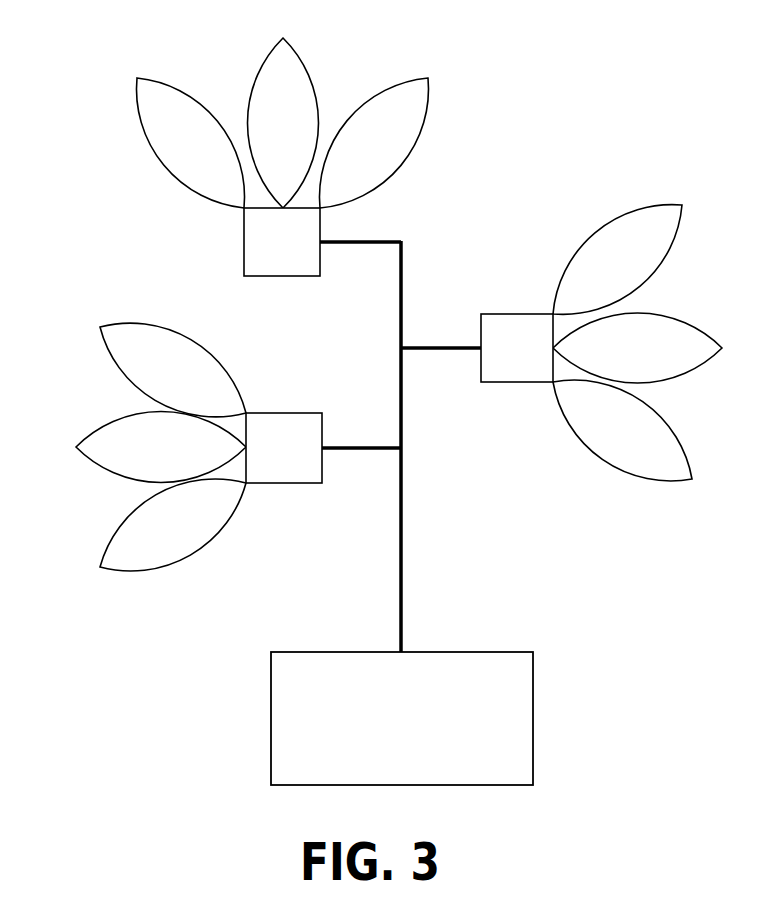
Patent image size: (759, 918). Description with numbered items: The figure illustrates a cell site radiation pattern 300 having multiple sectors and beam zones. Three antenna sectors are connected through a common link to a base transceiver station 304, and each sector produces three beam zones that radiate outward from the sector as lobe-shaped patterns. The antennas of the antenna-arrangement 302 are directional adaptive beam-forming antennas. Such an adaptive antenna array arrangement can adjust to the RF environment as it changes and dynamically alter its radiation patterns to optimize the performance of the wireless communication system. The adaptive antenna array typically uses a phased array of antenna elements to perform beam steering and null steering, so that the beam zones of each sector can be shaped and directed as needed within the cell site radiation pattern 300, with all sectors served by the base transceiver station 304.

The cell site radiation pattern 300 is at (623, 68).
The antenna-arrangement 302 is at (437, 253).
The base transceiver station 304 is at (381, 776).